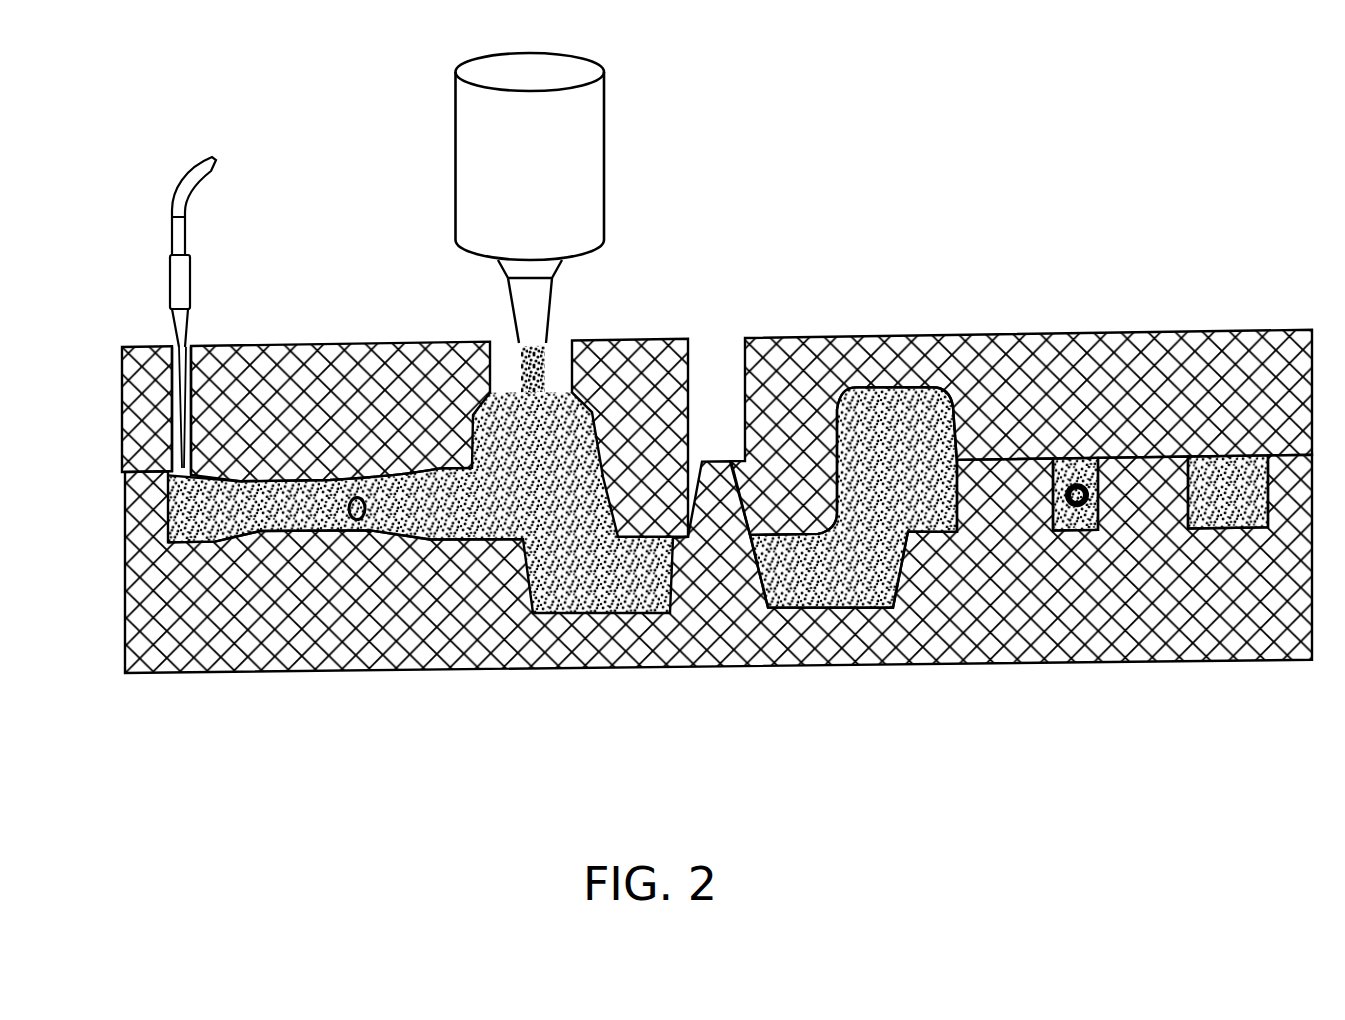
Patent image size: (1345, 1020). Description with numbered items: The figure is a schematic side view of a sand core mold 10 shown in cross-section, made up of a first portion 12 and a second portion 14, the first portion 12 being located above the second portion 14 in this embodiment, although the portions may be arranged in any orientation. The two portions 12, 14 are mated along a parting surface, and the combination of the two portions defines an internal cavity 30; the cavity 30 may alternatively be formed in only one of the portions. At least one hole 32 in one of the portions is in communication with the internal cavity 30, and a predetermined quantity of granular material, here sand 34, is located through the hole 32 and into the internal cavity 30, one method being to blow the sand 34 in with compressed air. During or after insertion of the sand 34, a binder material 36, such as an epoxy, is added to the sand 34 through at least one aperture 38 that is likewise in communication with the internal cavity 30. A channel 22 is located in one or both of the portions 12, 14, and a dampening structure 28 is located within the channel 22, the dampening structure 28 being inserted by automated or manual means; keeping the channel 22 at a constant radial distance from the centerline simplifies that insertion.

The sand core mold 10 is at (812, 268).
The first portion 12 is at (1068, 352).
The second portion 14 is at (1043, 637).
The channel 22 is at (1085, 532).
The dampening structure 28 is at (1087, 458).
The internal cavity 30 is at (887, 403).
The hole 32 is at (560, 338).
The sand 34 is at (522, 345).
The binder material 36 is at (172, 352).
The aperture 38 is at (191, 352).